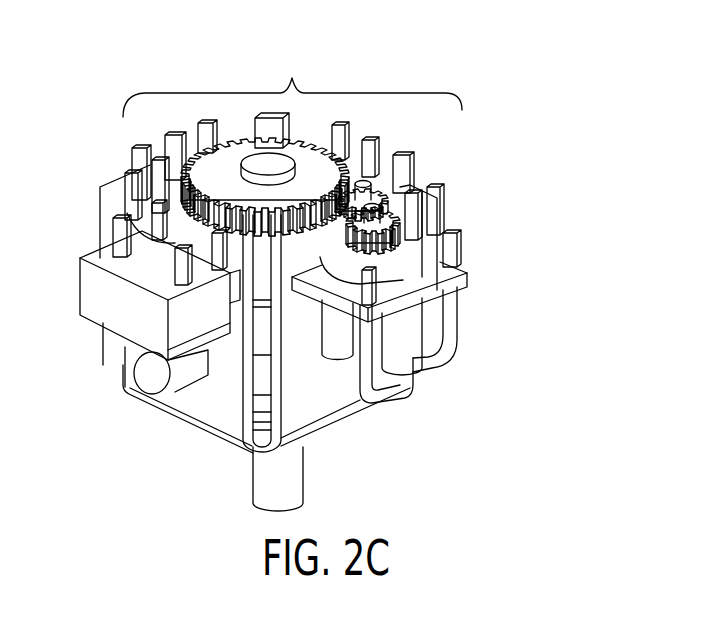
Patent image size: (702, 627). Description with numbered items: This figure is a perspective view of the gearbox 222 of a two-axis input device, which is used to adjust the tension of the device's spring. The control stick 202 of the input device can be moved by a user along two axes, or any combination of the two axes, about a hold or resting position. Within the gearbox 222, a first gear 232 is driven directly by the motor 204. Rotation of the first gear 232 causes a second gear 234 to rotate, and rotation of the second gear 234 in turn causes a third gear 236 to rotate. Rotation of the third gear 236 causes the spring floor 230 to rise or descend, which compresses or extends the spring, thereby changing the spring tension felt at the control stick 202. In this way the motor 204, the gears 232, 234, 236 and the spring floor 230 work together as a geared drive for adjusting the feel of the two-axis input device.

The spring floor 230 is at (505, 95).
The third gear 236 is at (233, 155).
The gearbox 222 is at (292, 80).
The second gear 234 is at (373, 193).
The first gear 232 is at (392, 200).
The motor 204 is at (415, 377).
The control stick 202 is at (303, 452).